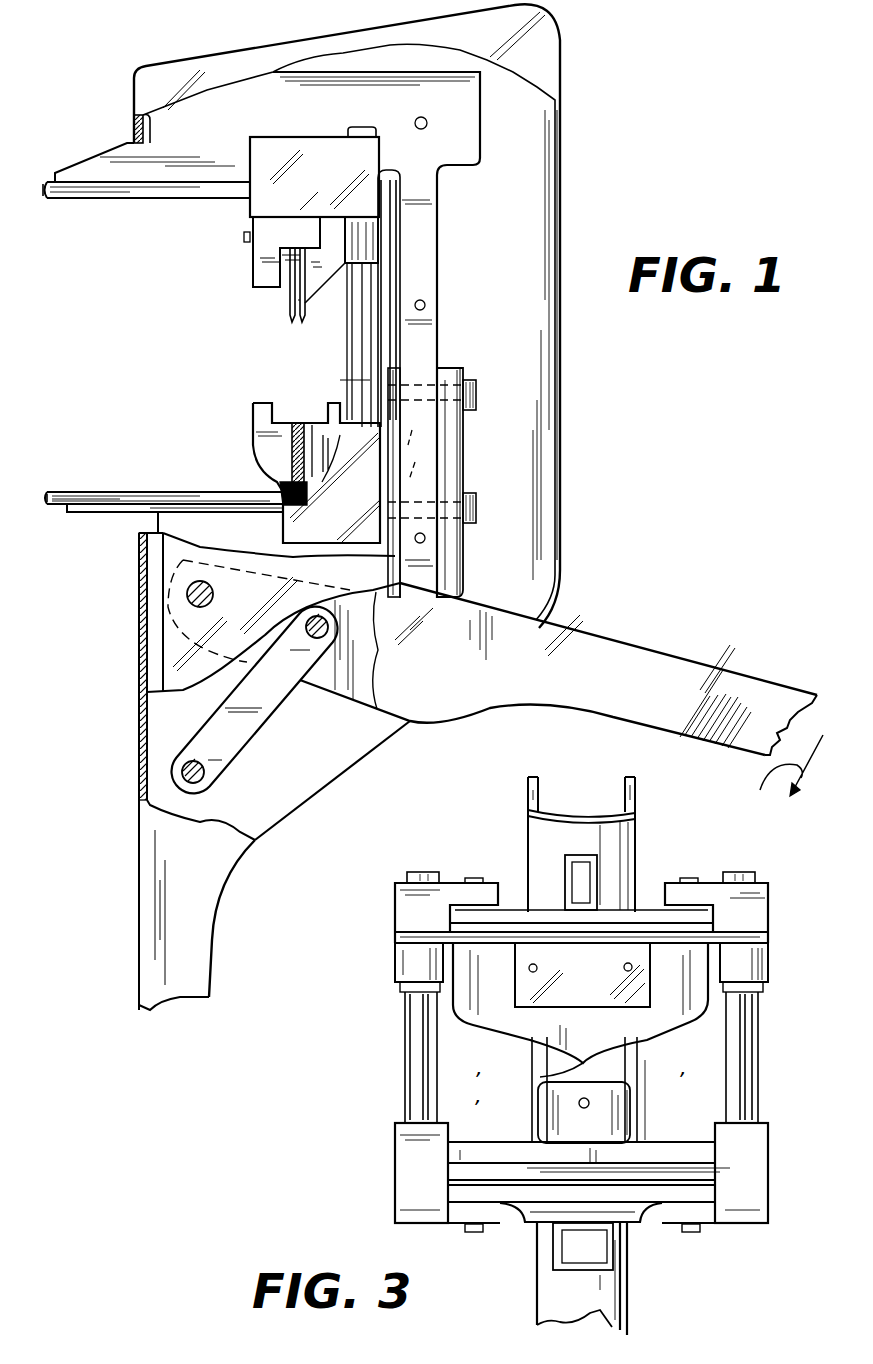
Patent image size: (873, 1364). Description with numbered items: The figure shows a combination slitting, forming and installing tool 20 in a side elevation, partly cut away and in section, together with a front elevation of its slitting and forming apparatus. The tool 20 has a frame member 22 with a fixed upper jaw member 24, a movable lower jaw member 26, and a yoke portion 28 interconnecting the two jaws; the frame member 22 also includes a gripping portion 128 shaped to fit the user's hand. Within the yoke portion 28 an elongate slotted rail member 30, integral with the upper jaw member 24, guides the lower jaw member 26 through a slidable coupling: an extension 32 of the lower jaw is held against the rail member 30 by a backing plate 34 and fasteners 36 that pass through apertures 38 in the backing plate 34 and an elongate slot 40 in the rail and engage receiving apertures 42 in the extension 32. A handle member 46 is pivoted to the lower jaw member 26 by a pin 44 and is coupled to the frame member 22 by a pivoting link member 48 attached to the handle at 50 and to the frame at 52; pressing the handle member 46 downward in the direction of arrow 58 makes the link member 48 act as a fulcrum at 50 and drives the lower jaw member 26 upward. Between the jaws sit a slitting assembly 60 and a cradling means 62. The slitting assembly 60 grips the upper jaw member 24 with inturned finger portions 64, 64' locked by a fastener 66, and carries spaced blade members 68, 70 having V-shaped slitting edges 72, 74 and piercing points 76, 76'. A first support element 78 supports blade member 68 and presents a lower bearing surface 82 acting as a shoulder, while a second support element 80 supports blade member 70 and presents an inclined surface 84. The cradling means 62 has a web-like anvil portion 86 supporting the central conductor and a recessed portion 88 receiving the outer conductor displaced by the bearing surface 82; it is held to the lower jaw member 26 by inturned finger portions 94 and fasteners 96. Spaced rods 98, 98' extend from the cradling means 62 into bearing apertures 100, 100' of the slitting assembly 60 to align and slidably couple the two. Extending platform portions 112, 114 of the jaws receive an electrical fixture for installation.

In FIG. 1, the combination tool 20 is at (650, 491).
In FIG. 1, the frame member 22 is at (562, 222).
In FIG. 3, the frame member 22 is at (687, 1288).
In FIG. 1, the fixed upper jaw member 24 is at (185, 190).
In FIG. 3, the fixed upper jaw member 24 is at (647, 910).
In FIG. 1, the movable lower jaw member 26 is at (113, 515).
In FIG. 3, the movable lower jaw member 26 is at (527, 1210).
In FIG. 1, the yoke portion 28 is at (548, 384).
In FIG. 1, the elongate slotted rail member 30 is at (420, 255).
In FIG. 1, the extension 32 is at (386, 368).
In FIG. 1, the backing plate 34 is at (463, 463).
In FIG. 1, the fasteners 36 is at (476, 393).
In FIG. 3, the fasteners 36 is at (588, 1109).
In FIG. 1, the apertures 38 is at (463, 368).
In FIG. 1, the elongate slot 40 is at (440, 363).
In FIG. 1, the receiving apertures 42 is at (421, 455).
In FIG. 1, the pin 44 is at (215, 598).
In FIG. 1, the handle member 46 is at (577, 623).
In FIG. 1, the pivoting link member 48 is at (297, 680).
In FIG. 1, the link attachment point on handle 50 is at (333, 628).
In FIG. 1, the link attachment point on frame 52 is at (208, 782).
In FIG. 1, the arrow 58 is at (780, 775).
In FIG. 1, the slitting assembly 60 is at (248, 259).
In FIG. 3, the slitting assembly 60 is at (774, 913).
In FIG. 1, the cradling means 62 is at (246, 454).
In FIG. 3, the cradling means 62 is at (774, 1152).
In FIG. 3, the inturned finger portion 64 is at (426, 856).
In FIG. 3, the inturned finger portion 64' is at (738, 858).
In FIG. 3, the fastener 66 is at (472, 878).
In FIG. 1, the blade member 68 is at (292, 297).
In FIG. 3, the blade member 68 is at (673, 1030).
In FIG. 1, the blade member 70 is at (307, 312).
In FIG. 3, the blade member 70 is at (669, 1090).
In FIG. 1, the V-shaped sharpened slitting edge 72 is at (289, 324).
In FIG. 3, the V-shaped sharpened slitting edge 72 is at (480, 1030).
In FIG. 1, the V-shaped sharpened slitting edge 74 is at (283, 341).
In FIG. 3, the V-shaped sharpened slitting edge 74 is at (514, 1090).
In FIG. 3, the piercing point 76 is at (538, 1107).
In FIG. 3, the piercing point 76' is at (554, 1109).
In FIG. 1, the first support element 78 is at (252, 279).
In FIG. 3, the first support element 78 is at (645, 985).
In FIG. 1, the second support element 80 is at (342, 250).
In FIG. 1, the lower bearing surface 82 is at (257, 288).
In FIG. 3, the lower bearing surface 82 is at (592, 1008).
In FIG. 1, the inclined or tapered surface 84 is at (327, 285).
In FIG. 1, the web-like anvil portion 86 is at (324, 393).
In FIG. 3, the web-like anvil portion 86 is at (663, 1100).
In FIG. 1, the opening or recessed portion 88 is at (260, 422).
In FIG. 3, the inturned finger portion 94 is at (443, 1226).
In FIG. 3, the fasteners 96 is at (477, 1233).
In FIG. 3, the elongate rod 98 is at (421, 1057).
In FIG. 1, the elongate rod 98' is at (339, 345).
In FIG. 3, the elongate rod 98' is at (768, 1057).
In FIG. 3, the bearing aperture 100 is at (385, 978).
In FIG. 3, the bearing aperture 100' is at (781, 978).
In FIG. 1, the extending platform portion 112 is at (93, 198).
In FIG. 1, the extending platform portion 114 is at (90, 490).
In FIG. 1, the gripping portion 128 is at (200, 932).